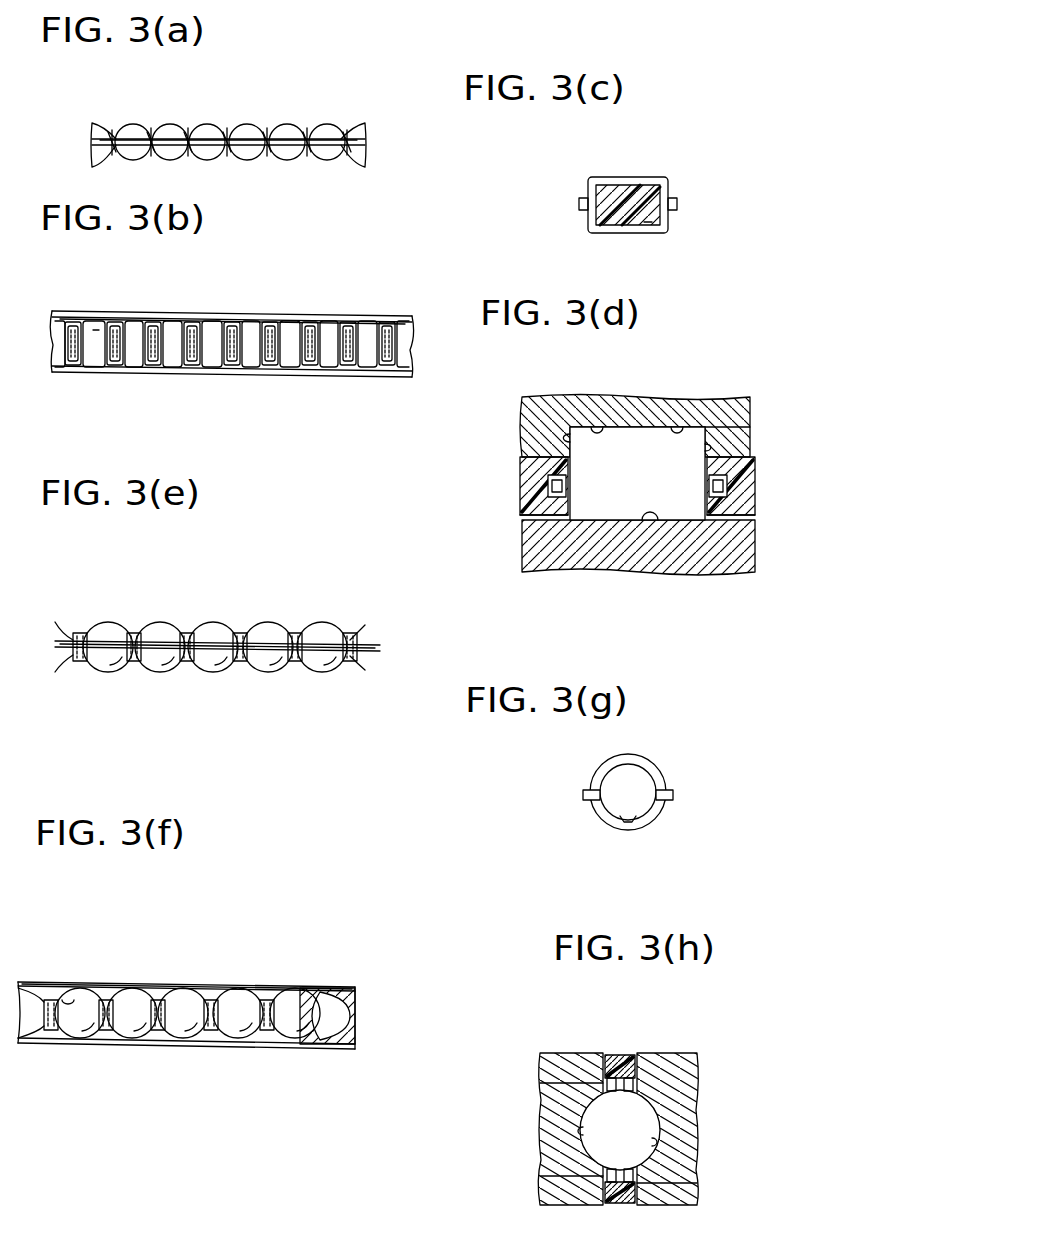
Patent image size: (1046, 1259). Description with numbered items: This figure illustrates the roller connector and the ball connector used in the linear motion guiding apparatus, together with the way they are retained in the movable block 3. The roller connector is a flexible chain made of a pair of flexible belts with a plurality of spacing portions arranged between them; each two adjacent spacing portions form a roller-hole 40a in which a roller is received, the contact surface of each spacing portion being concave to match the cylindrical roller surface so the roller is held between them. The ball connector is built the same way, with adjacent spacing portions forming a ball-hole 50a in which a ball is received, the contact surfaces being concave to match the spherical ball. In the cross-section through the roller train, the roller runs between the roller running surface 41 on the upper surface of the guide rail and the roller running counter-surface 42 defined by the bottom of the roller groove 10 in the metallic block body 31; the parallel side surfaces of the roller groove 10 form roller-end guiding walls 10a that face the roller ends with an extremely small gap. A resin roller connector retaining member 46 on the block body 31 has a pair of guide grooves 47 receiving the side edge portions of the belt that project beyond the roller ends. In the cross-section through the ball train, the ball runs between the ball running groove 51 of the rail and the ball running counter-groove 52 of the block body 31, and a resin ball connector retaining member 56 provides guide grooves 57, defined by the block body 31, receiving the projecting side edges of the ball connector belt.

The movable block 3 is at (510, 398).
The roller groove 10 is at (677, 424).
The roller-end guiding wall 10a is at (570, 440).
The block body 31 is at (730, 418).
The roller-hole 40a is at (95, 356).
The roller running surface 41 is at (650, 530).
The roller running counter-surface 42 is at (597, 422).
The roller connector retaining member 46 is at (755, 510).
The guide groove 47 is at (540, 485).
The ball-hole 50a is at (68, 996).
The ball running groove 51 is at (655, 1145).
The ball running counter-groove 52 is at (583, 1131).
The ball connector retaining member 56 is at (640, 1062).
The guide groove 57 is at (603, 1072).